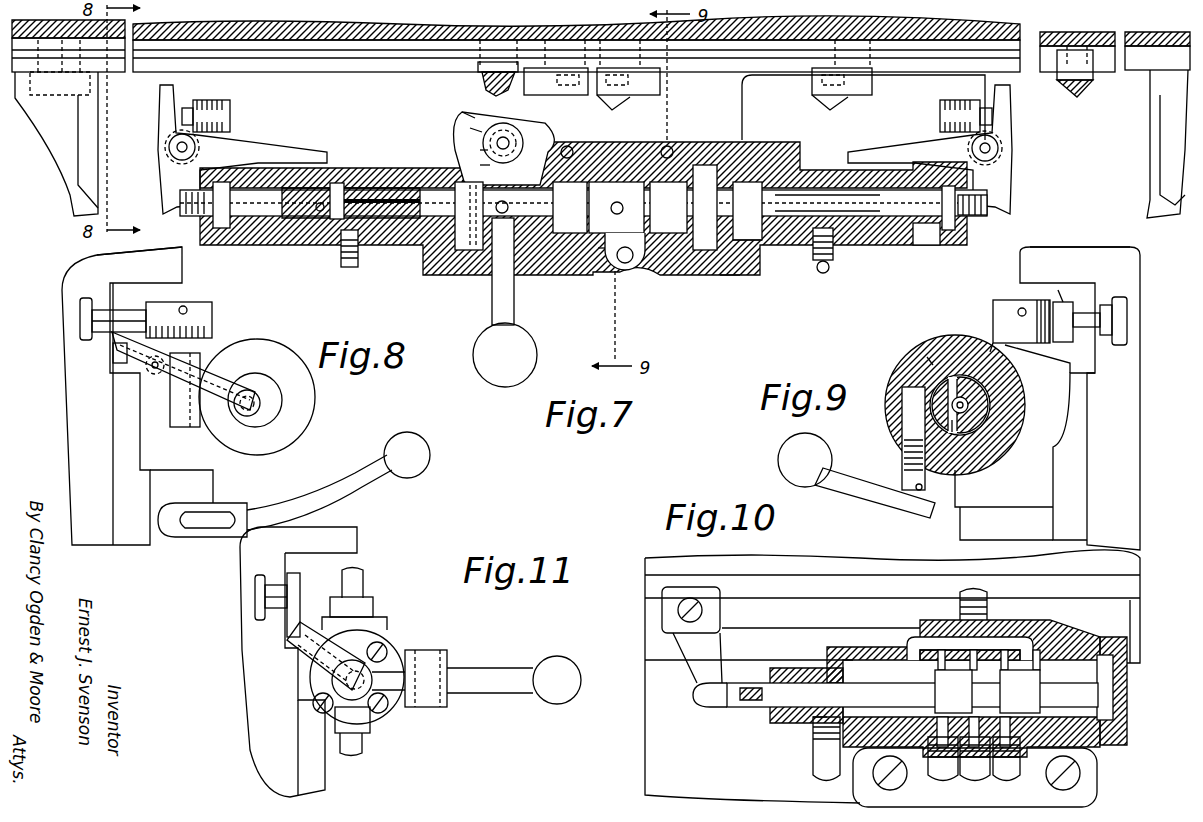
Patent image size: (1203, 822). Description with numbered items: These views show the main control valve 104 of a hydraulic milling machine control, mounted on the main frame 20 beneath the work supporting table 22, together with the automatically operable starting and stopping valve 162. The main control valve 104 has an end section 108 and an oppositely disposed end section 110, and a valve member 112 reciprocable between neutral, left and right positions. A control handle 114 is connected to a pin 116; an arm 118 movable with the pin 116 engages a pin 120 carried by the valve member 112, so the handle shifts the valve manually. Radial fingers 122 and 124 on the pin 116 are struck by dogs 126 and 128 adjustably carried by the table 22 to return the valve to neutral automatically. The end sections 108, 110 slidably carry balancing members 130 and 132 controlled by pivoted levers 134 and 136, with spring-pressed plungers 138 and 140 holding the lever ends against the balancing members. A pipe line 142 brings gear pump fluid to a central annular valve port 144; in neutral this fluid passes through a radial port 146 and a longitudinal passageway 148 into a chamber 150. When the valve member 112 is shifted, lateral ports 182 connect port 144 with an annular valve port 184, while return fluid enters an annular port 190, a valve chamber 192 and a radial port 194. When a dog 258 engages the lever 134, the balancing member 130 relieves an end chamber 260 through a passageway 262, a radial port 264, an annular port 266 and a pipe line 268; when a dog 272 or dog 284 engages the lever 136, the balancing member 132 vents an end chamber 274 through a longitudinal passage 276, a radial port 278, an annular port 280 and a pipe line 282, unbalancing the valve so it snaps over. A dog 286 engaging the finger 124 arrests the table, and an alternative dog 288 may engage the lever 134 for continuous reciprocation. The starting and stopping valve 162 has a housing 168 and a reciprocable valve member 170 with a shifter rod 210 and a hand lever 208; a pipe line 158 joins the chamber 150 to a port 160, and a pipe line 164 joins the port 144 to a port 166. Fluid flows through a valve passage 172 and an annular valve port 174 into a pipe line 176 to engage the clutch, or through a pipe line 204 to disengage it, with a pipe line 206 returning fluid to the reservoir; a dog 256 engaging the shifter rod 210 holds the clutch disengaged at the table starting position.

In FIG. 8, the main frame 20 is at (115, 550).
In FIG. 9, the main frame 20 is at (1118, 473).
In FIG. 11, the main frame 20 is at (263, 733).
In FIG. 7, the work supporting table 22 is at (712, 28).
In FIG. 8, the work supporting table 22 is at (66, 272).
In FIG. 9, the work supporting table 22 is at (1120, 263).
In FIG. 11, the work supporting table 22 is at (357, 541).
In FIG. 10, the work supporting table 22 is at (733, 563).
In FIG. 7, the main control valve 104 is at (690, 278).
In FIG. 8, the main control valve 104 is at (316, 402).
In FIG. 9, the main control valve 104 is at (908, 353).
In FIG. 7, the end section 108 is at (297, 240).
In FIG. 8, the end section 108 is at (270, 424).
In FIG. 7, the end section 110 is at (875, 250).
In FIG. 7, the valve member 112 is at (668, 194).
In FIG. 9, the valve member 112 is at (933, 396).
In FIG. 7, the control handle 114 is at (492, 324).
In FIG. 8, the control handle 114 is at (375, 480).
In FIG. 9, the control handle 114 is at (858, 490).
In FIG. 7, the pin 116 is at (484, 146).
In FIG. 7, the arm 118 is at (486, 163).
In FIG. 7, the pin 120 is at (470, 255).
In FIG. 7, the radial finger 122 is at (478, 128).
In FIG. 8, the radial finger 122 is at (140, 290).
In FIG. 9, the radial finger 122 is at (1005, 332).
In FIG. 7, the radial finger 124 is at (548, 128).
In FIG. 8, the radial finger 124 is at (182, 302).
In FIG. 9, the radial finger 124 is at (1003, 310).
In FIG. 7, the dog 126 is at (620, 98).
In FIG. 9, the dog 126 is at (1062, 345).
In FIG. 7, the dog 128 is at (815, 134).
In FIG. 7, the balancing member 130 is at (262, 214).
In FIG. 8, the balancing member 130 is at (248, 418).
In FIG. 7, the balancing member 132 is at (905, 228).
In FIG. 7, the lever 134 is at (163, 192).
In FIG. 8, the lever 134 is at (148, 370).
In FIG. 7, the lever 136 is at (1010, 186).
In FIG. 7, the spring-pressed plunger 138 is at (232, 117).
In FIG. 7, the spring-pressed plunger 140 is at (937, 117).
In FIG. 9, the pipe line 142 is at (908, 470).
In FIG. 7, the central annular valve port 144 is at (670, 148).
In FIG. 9, the central annular valve port 144 is at (955, 433).
In FIG. 7, the radial port 146 is at (625, 266).
In FIG. 9, the radial port 146 is at (948, 438).
In FIG. 7, the longitudinal passageway 148 is at (566, 236).
In FIG. 7, the chamber 150 is at (463, 252).
In FIG. 11, the pipe line 158 is at (365, 581).
In FIG. 10, the pipe line 158 is at (978, 602).
In FIG. 10, the port 160 is at (965, 640).
In FIG. 11, the starting and stopping valve 162 is at (402, 640).
In FIG. 10, the starting and stopping valve 162 is at (793, 753).
In FIG. 11, the pipe line 164 is at (357, 745).
In FIG. 10, the pipe line 164 is at (827, 760).
In FIG. 10, the port 166 is at (822, 719).
In FIG. 10, the housing 168 is at (1097, 742).
In FIG. 10, the valve member 170 is at (1082, 685).
In FIG. 10, the valve passage 172 is at (1003, 640).
In FIG. 10, the annular valve port 174 is at (912, 643).
In FIG. 10, the pipe line 176 is at (937, 762).
In FIG. 7, the lateral ports 182 is at (600, 255).
In FIG. 9, the lateral ports 182 is at (936, 412).
In FIG. 7, the annular valve port 184 is at (592, 238).
In FIG. 7, the annular port 190 is at (700, 252).
In FIG. 9, the annular port 190 is at (927, 357).
In FIG. 7, the valve chamber 192 is at (728, 278).
In FIG. 7, the radial port 194 is at (738, 246).
In FIG. 10, the pipe line 204 is at (1005, 765).
In FIG. 10, the pipe line 206 is at (973, 765).
In FIG. 11, the hand lever 208 is at (495, 685).
In FIG. 10, the hand lever 208 is at (743, 703).
In FIG. 10, the shifter rod 210 is at (775, 700).
In FIG. 11, the dog 256 is at (328, 638).
In FIG. 10, the dog 256 is at (693, 657).
In FIG. 7, the dog 258 is at (460, 112).
In FIG. 8, the dog 258 is at (72, 350).
In FIG. 7, the end chamber 260 is at (465, 184).
In FIG. 7, the passageway 262 is at (340, 205).
In FIG. 7, the radial port 264 is at (323, 248).
In FIG. 7, the annular port 266 is at (318, 190).
In FIG. 7, the pipe line 268 is at (349, 270).
In FIG. 7, the dog 272 is at (1150, 148).
In FIG. 7, the end chamber 274 is at (752, 242).
In FIG. 7, the longitudinal passage 276 is at (790, 205).
In FIG. 7, the radial port 278 is at (890, 232).
In FIG. 7, the annular port 280 is at (823, 262).
In FIG. 7, the pipe line 282 is at (818, 272).
In FIG. 7, the dog 284 is at (1077, 97).
In FIG. 7, the dog 286 is at (548, 92).
In FIG. 9, the dog 286 is at (1063, 302).
In FIG. 7, the dog 288 is at (66, 158).